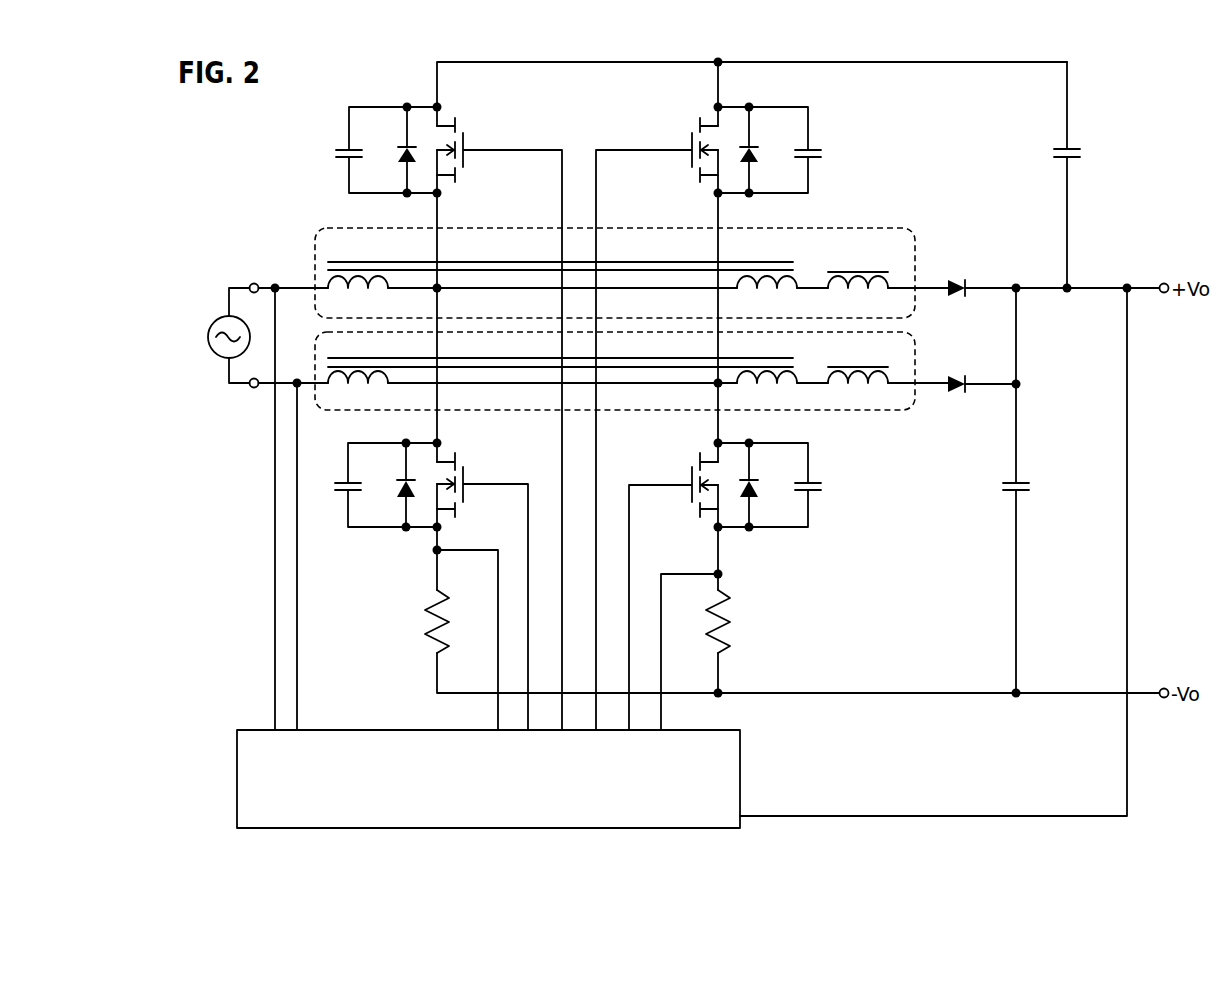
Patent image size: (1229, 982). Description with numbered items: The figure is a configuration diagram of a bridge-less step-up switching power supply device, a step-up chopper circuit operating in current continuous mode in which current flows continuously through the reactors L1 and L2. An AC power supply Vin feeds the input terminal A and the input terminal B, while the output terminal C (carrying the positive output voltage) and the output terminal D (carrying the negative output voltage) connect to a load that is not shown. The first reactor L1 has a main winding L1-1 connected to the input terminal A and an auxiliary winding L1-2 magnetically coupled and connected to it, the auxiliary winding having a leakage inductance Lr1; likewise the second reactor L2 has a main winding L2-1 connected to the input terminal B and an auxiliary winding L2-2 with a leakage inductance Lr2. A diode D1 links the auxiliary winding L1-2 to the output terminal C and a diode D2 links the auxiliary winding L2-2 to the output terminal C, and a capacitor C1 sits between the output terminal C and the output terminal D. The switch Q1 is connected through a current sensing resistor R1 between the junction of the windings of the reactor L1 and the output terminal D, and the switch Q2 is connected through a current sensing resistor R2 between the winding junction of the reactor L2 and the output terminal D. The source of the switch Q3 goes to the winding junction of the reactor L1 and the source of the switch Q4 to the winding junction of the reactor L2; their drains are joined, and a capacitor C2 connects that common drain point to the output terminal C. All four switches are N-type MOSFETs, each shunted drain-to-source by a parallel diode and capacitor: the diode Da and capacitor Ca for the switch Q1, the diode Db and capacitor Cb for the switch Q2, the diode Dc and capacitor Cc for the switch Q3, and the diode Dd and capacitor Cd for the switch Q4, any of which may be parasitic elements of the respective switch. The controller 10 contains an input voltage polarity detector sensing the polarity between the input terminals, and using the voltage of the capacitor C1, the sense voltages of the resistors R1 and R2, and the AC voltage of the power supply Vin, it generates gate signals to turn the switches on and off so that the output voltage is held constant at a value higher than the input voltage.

The controller 10 is at (740, 781).
The first switch Q1 is at (482, 586).
The second switch Q2 is at (673, 591).
The third switch Q3 is at (499, 419).
The fourth switch Q4 is at (657, 419).
The capacitor Ca is at (336, 473).
The capacitor Cb is at (819, 473).
The capacitor Cc is at (337, 139).
The capacitor Cd is at (819, 139).
The diode Da is at (393, 476).
The diode Db is at (763, 477).
The diode Dc is at (394, 141).
The diode Dd is at (763, 142).
The first reactor L1 is at (364, 228).
The second reactor L2 is at (373, 410).
The first main winding L1-1 is at (560, 263).
The first auxiliary winding L1-2 is at (767, 263).
The second main winding L2-1 is at (560, 358).
The second auxiliary winding L2-2 is at (767, 359).
The first leakage inductance Lr1 is at (858, 263).
The second leakage inductance Lr2 is at (858, 359).
The first diode D1 is at (957, 273).
The second diode D2 is at (957, 369).
The first capacitor C1 is at (1002, 490).
The second capacitor C2 is at (1078, 175).
The current sensing resistor R1 is at (421, 621).
The current sensing resistor R2 is at (733, 621).
The AC power supply Vin is at (211, 335).
The first input terminal A is at (253, 276).
The second input terminal B is at (253, 398).
The first output terminal C is at (1161, 273).
The second output terminal D is at (1163, 679).